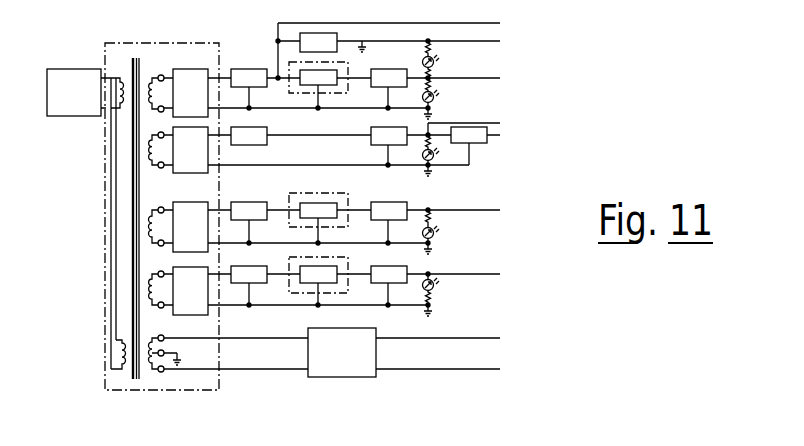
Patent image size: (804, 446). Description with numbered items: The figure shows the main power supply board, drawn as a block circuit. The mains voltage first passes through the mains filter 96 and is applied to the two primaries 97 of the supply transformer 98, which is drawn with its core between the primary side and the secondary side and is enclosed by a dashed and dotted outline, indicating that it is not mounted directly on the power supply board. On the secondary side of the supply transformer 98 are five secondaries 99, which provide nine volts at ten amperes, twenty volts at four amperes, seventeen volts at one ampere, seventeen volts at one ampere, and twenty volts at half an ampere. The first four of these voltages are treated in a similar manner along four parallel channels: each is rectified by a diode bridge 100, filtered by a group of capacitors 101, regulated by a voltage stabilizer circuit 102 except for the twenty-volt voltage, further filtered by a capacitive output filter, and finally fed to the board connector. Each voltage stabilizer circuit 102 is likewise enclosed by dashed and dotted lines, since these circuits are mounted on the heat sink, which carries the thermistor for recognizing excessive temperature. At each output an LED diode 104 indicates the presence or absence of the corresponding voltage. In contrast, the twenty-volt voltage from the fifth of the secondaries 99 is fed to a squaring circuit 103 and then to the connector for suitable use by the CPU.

The mains filter 96 is at (72, 80).
The primaries 97 is at (122, 107).
The supply transformer 98 is at (177, 382).
The secondary coils 99 is at (158, 75).
The diode bridge 100 is at (193, 80).
The group of capacitors 101 is at (243, 72).
The voltage stabilizer circuit 102 is at (331, 80).
The squaring circuit 103 is at (328, 372).
The LED diode 104 is at (437, 64).